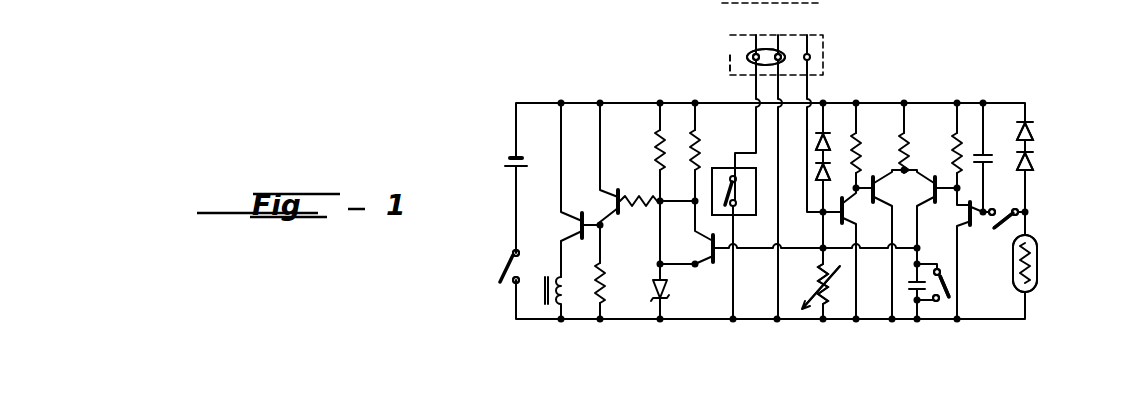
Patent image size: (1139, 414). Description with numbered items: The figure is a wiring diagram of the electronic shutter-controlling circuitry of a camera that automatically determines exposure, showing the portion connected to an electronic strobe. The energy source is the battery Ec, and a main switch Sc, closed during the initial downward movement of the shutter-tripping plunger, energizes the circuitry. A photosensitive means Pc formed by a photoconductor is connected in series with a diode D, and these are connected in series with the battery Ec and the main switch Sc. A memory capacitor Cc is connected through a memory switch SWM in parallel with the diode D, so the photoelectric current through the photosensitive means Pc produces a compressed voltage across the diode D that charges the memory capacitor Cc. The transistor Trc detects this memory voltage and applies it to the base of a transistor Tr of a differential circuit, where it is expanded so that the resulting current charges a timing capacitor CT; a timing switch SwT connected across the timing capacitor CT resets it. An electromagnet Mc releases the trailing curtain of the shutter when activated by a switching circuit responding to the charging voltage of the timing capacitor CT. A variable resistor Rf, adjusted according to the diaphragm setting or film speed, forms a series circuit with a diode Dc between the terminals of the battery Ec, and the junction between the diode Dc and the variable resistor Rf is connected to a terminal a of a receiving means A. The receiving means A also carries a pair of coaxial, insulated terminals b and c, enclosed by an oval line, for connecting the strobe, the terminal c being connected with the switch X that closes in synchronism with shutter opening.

The battery Ec is at (505, 152).
The main switch Sc is at (505, 256).
The electromagnet Mc is at (543, 290).
The flash-synchronizing switch X is at (724, 166).
The terminal b is at (757, 47).
The terminal c is at (748, 53).
The receiving means A is at (730, 71).
The terminal a is at (797, 54).
The diode Dc is at (836, 160).
The transistor Tr is at (920, 172).
The memory capacitor Cc is at (1003, 140).
The diode D is at (1038, 156).
The memory switch SWM is at (1013, 210).
The transistor Trc is at (962, 228).
The photosensitive means Pc is at (1040, 266).
The timing switch SwT is at (950, 285).
The timing capacitor CT is at (915, 292).
The variable resistor Rf is at (812, 290).